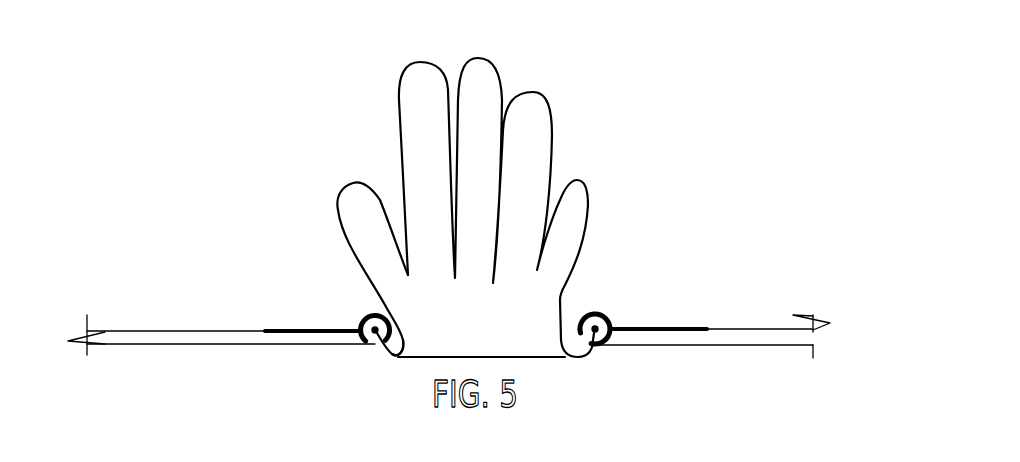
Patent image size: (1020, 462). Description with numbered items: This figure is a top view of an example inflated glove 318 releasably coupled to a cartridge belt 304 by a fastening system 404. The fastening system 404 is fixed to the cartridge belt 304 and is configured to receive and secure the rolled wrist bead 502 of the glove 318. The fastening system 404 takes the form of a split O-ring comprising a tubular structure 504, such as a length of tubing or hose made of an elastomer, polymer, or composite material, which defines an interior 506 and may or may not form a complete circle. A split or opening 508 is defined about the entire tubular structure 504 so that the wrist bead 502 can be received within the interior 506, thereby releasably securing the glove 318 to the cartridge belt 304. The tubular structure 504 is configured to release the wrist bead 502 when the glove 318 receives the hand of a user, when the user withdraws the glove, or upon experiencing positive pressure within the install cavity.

The inflated glove 318 is at (582, 132).
The cartridge belt 304 is at (182, 337).
The tubular structure 504 is at (367, 315).
The interior 506 is at (372, 348).
The split or opening 508 is at (405, 333).
The fastening system 404 is at (603, 313).
The rolled wrist bead 502 is at (611, 322).